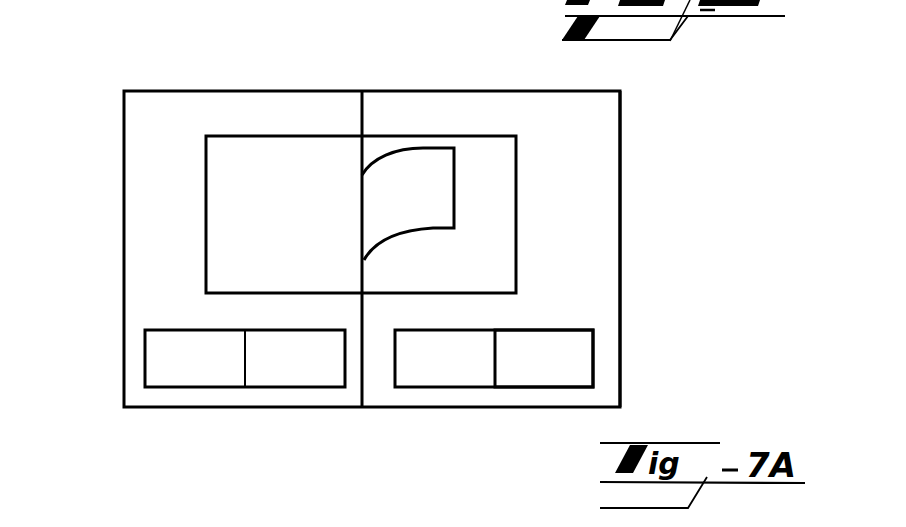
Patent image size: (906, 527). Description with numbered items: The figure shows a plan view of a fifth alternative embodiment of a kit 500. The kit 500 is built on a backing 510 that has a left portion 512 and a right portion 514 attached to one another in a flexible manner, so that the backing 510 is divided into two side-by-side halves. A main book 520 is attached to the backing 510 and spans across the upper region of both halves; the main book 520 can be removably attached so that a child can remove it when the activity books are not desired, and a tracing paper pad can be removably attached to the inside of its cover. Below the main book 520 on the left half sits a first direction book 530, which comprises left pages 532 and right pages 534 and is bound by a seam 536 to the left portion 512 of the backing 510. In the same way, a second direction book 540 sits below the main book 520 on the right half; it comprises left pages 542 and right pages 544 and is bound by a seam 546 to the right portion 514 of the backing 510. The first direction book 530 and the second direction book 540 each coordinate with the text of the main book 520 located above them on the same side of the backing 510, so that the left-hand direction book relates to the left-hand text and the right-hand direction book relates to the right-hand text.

The kit 500 is at (333, 203).
The backing 510 is at (142, 92).
The left portion 512 is at (281, 91).
The right portion 514 is at (461, 103).
The main book 520 is at (204, 216).
The first direction book 530 is at (146, 347).
The left pages 532 is at (167, 330).
The right pages 534 is at (453, 190).
The seam 536 is at (247, 368).
The second direction book 540 is at (596, 357).
The left pages 542 is at (447, 377).
The right pages 544 is at (553, 330).
The seam 546 is at (495, 372).